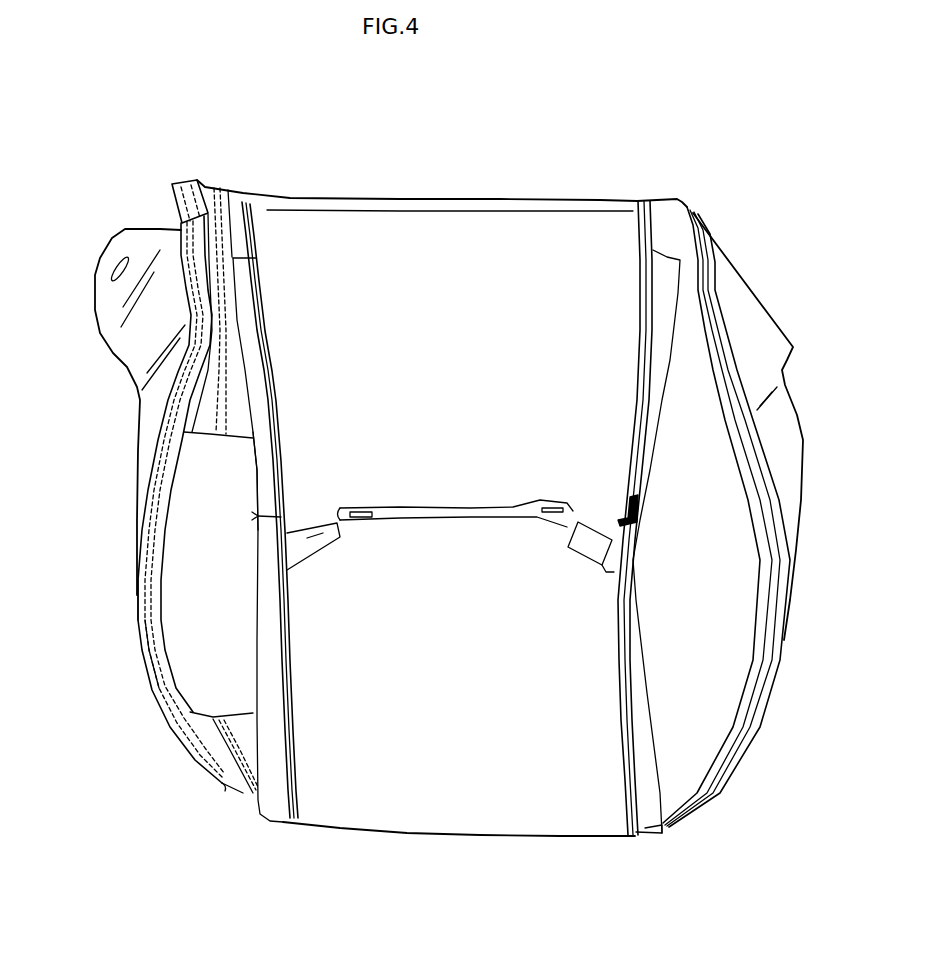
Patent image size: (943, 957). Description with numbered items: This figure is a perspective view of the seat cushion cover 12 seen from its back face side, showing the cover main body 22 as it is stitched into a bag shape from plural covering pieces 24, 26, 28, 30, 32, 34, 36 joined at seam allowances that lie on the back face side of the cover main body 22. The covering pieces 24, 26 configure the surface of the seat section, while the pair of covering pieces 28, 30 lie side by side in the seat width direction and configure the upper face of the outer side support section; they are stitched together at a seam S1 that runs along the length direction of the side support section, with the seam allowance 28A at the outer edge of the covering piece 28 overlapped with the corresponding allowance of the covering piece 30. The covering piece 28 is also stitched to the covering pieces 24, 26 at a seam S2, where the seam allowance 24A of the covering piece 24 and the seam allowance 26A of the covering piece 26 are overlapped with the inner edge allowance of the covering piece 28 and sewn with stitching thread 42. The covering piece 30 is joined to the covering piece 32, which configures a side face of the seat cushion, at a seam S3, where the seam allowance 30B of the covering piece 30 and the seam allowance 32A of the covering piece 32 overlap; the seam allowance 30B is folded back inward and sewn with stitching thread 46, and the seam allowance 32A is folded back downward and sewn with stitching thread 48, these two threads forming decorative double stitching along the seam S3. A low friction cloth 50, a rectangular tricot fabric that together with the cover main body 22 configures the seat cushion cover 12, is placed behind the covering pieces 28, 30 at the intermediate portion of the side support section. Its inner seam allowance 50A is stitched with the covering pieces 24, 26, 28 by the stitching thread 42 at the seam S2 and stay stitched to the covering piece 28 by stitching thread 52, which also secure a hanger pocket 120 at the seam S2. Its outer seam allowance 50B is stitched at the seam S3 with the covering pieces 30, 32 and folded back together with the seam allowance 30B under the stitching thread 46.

The seat cushion cover 12 is at (512, 145).
The cover main body 22 is at (543, 842).
The covering piece 24 is at (458, 805).
The seam allowance 24A is at (290, 645).
The covering piece 26 is at (458, 250).
The seam allowance 26A is at (283, 410).
The covering piece 28 is at (243, 733).
The seam allowance 28A is at (210, 723).
The covering piece 30 is at (197, 773).
The seam allowance 30B is at (163, 600).
The covering piece 32 is at (147, 420).
The seam allowance 32A is at (160, 463).
The covering piece 34 is at (705, 707).
The covering piece 36 is at (750, 317).
The stitching thread 42 is at (230, 378).
The stitching thread 46 is at (163, 668).
The stitching thread 48 is at (143, 610).
The low friction cloth 50 is at (177, 563).
The seam allowance 50A is at (270, 487).
The seam allowance 50B is at (163, 518).
The stitching thread 52 is at (227, 360).
The hanger pocket 120 is at (258, 455).
The seam S1 is at (223, 778).
The seam S2 is at (290, 688).
The seam S3 is at (135, 641).